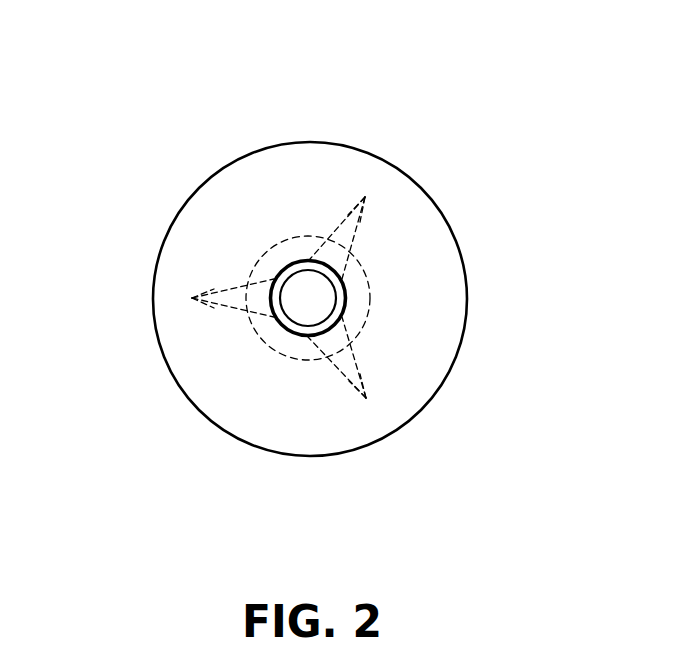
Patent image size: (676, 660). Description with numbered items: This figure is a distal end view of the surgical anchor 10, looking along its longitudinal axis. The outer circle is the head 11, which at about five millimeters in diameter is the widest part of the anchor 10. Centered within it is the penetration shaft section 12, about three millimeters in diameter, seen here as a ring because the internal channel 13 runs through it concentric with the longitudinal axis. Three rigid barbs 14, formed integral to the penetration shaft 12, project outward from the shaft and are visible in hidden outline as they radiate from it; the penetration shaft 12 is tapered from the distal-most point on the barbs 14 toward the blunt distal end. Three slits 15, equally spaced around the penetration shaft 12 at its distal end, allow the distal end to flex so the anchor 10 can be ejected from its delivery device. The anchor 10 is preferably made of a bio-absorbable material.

The anchor 10 is at (313, 92).
The head 11 is at (295, 442).
The penetration shaft section 12 is at (367, 278).
The internal channel 13 is at (322, 300).
The rigid barbs 14 is at (353, 212).
The slits 15 is at (287, 270).